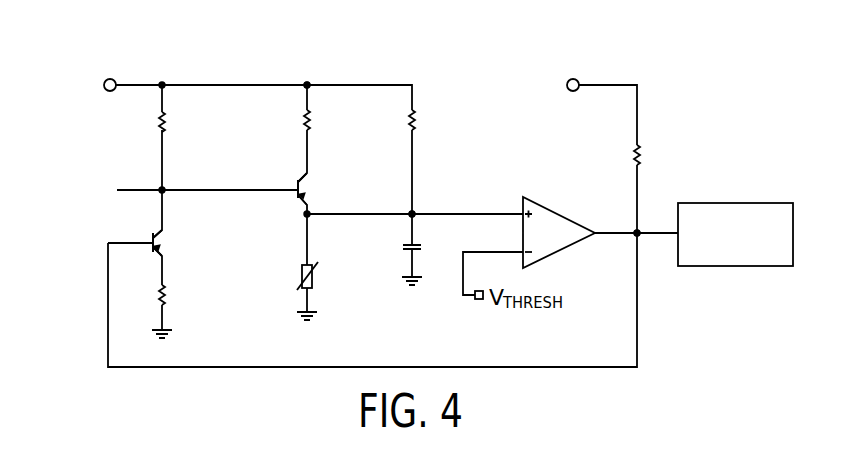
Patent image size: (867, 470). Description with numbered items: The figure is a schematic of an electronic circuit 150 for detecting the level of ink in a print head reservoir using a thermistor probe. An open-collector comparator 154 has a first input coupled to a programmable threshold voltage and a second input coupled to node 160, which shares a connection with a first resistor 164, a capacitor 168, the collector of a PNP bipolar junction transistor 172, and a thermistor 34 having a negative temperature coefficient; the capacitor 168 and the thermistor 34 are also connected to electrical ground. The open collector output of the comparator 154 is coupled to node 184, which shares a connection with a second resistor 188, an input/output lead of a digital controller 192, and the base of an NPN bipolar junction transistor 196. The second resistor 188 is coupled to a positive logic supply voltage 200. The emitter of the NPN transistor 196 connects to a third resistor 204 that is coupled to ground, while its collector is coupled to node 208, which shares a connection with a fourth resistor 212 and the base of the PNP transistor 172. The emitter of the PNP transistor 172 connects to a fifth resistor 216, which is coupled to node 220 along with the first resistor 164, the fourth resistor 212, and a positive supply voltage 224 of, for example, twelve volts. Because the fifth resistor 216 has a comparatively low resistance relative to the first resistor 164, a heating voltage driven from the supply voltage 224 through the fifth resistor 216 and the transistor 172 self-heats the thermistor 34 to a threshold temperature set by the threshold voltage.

The electronic circuit 150 is at (700, 71).
The positive supply voltage 224 is at (104, 84).
The fourth resistor 212 is at (177, 121).
The node 208 is at (130, 190).
The NPN bipolar junction transistor 196 is at (166, 242).
The third resistor 204 is at (177, 294).
The node 220 is at (308, 84).
The fifth resistor 216 is at (323, 118).
The PNP bipolar junction transistor 172 is at (321, 188).
The first resistor 164 is at (428, 118).
The node 160 is at (414, 213).
The capacitor 168 is at (392, 246).
The thermistor 34 is at (316, 285).
The open-collector comparator 154 is at (553, 212).
The positive logic supply voltage 200 is at (575, 79).
The second resistor 188 is at (656, 153).
The node 184 is at (639, 232).
The digital controller 192 is at (735, 266).